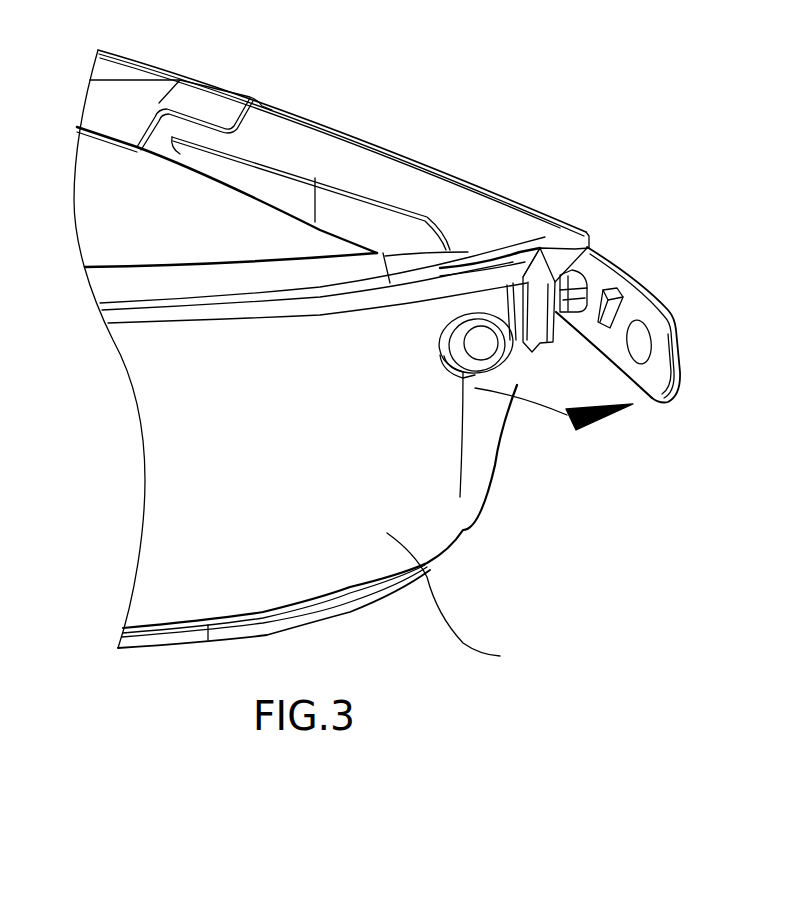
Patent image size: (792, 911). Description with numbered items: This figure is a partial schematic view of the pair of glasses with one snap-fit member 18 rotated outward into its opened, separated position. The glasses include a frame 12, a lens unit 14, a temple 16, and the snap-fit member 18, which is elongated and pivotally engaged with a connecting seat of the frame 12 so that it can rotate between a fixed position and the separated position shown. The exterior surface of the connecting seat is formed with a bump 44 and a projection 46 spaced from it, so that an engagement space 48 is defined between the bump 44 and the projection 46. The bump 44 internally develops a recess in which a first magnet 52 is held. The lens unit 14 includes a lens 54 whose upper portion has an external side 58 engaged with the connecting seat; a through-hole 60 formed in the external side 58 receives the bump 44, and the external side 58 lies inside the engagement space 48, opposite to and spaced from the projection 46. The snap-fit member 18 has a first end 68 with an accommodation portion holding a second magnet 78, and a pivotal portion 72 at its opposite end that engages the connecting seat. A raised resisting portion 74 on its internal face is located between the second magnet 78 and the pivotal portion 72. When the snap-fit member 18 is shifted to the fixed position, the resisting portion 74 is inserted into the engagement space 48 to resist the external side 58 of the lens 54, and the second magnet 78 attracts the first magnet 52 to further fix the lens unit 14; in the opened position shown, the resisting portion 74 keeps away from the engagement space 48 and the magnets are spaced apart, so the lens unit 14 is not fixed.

The frame 12 is at (118, 283).
The lens unit 14 is at (380, 606).
The temple 16 is at (320, 137).
The snap-fit member 18 is at (662, 331).
The bump 44 is at (460, 362).
The projection 46 is at (568, 293).
The engagement space 48 is at (542, 292).
The first magnet 52 is at (480, 345).
The lens 54 is at (500, 656).
The external side 58 is at (510, 305).
The through-hole 60 is at (460, 497).
The first end 68 is at (680, 367).
The pivotal portion 72 is at (588, 295).
The resisting portion 74 is at (622, 305).
The second magnet 78 is at (645, 352).